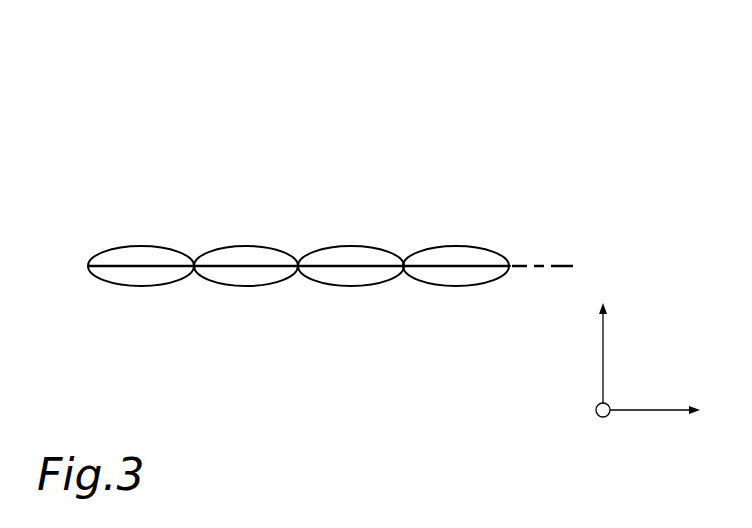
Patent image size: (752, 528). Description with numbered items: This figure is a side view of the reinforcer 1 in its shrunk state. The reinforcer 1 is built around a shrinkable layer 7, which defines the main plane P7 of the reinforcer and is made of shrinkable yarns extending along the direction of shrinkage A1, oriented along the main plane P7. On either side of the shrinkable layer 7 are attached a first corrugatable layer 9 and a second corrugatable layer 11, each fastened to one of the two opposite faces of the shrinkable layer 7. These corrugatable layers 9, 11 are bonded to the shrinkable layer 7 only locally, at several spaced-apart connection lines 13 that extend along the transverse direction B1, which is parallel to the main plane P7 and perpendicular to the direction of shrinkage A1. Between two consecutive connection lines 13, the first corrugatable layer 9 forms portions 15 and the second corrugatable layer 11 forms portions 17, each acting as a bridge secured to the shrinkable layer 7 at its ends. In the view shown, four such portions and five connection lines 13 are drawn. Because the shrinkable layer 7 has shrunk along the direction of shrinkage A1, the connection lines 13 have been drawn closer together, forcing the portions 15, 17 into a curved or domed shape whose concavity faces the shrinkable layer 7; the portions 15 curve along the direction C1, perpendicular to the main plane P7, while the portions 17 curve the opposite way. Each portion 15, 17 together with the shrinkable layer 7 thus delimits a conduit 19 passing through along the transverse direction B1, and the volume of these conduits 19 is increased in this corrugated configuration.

The reinforcer 1 is at (369, 139).
The shrinkable layer 7 is at (129, 265).
The first corrugatable layer 9 is at (108, 250).
The second corrugatable layer 11 is at (142, 287).
The connection lines 13 is at (90, 265).
The portions of the first corrugatable layer 15 is at (155, 246).
The portions of the second corrugatable layer 17 is at (107, 282).
The conduit 19 is at (242, 284).
The main plane P7 is at (572, 265).
The direction of shrinkage A1 is at (655, 396).
The transverse direction B1 is at (592, 398).
The thickness direction C1 is at (619, 348).